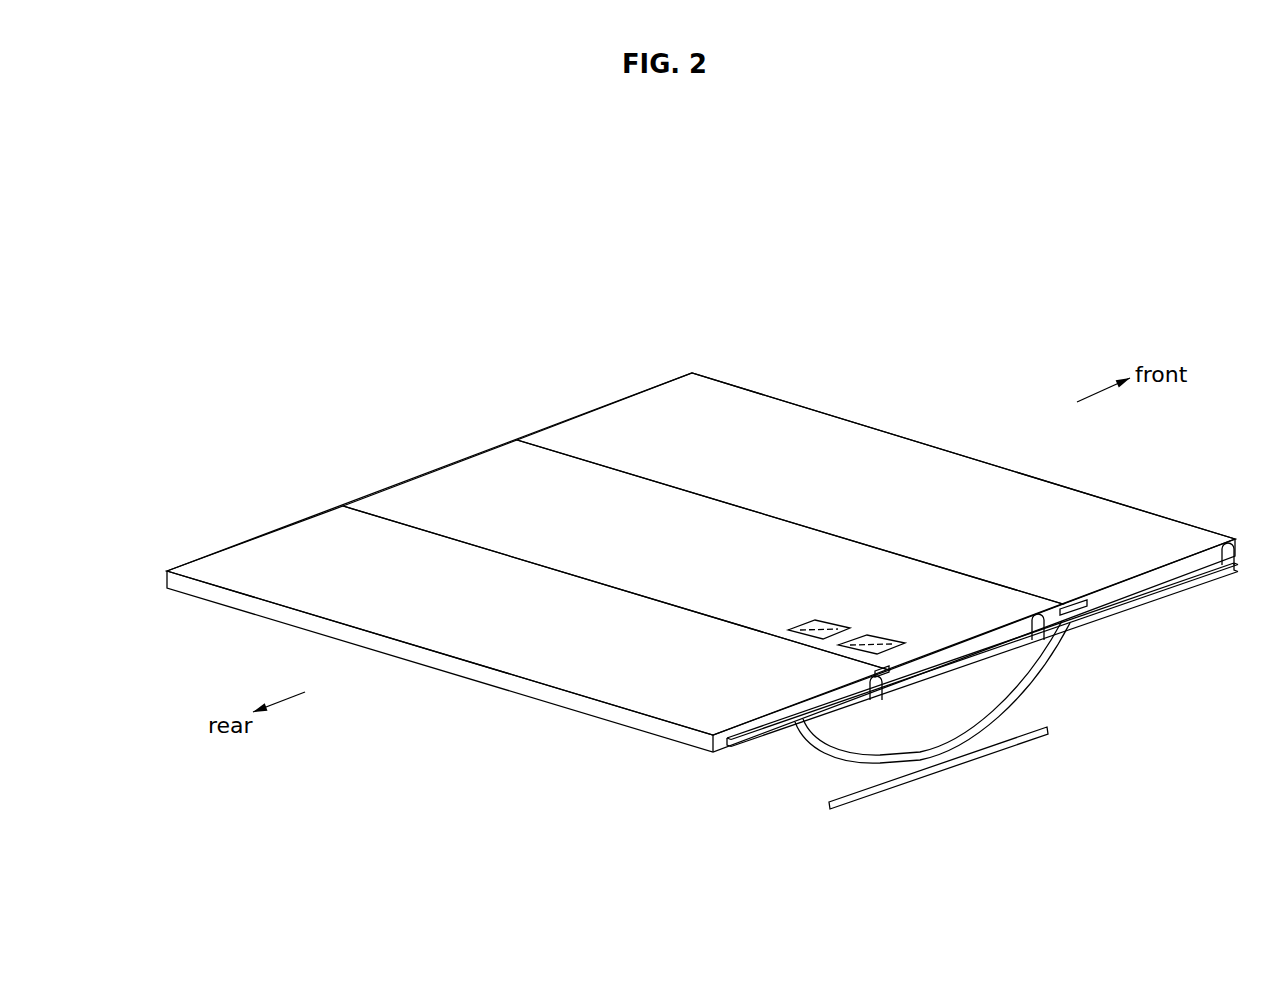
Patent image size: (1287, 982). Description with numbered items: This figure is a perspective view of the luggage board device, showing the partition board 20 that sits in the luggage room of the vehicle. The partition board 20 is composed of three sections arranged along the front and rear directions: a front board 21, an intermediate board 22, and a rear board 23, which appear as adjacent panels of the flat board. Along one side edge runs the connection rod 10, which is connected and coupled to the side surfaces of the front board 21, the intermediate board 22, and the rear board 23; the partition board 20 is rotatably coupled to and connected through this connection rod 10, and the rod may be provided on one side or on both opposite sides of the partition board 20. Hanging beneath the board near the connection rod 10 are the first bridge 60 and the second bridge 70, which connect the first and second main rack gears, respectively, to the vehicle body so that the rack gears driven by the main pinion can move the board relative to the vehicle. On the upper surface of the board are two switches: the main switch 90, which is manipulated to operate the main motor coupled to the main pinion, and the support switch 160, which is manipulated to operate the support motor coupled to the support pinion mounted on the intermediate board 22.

The connection rod 10 is at (1158, 596).
The partition board 20 is at (583, 397).
The front board 21 is at (762, 415).
The intermediate board 22 is at (452, 487).
The rear board 23 is at (279, 564).
The first bridge 60 is at (1047, 678).
The second bridge 70 is at (885, 763).
The main switch 90 is at (818, 628).
The support switch 160 is at (872, 642).